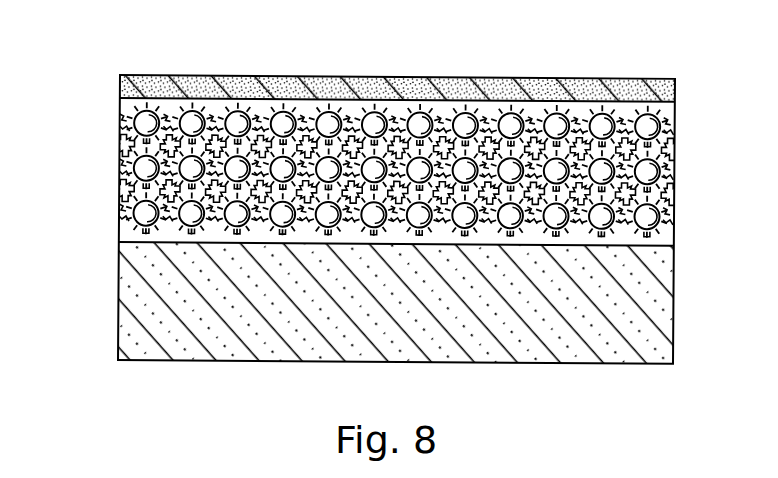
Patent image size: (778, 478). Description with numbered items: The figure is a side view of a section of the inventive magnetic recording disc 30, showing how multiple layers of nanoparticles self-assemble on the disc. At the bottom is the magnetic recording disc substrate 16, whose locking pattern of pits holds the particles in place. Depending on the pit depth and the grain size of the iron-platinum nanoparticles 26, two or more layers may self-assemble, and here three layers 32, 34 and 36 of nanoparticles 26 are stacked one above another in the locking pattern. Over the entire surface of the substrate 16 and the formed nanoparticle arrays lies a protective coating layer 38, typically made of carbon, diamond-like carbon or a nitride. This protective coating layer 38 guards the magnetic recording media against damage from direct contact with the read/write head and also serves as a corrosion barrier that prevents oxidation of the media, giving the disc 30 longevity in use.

The magnetic recording disc substrate 16 is at (533, 360).
The iron-platinum nanoparticles 26 is at (661, 126).
The magnetic recording disc 30 is at (380, 241).
The first layer of nanoparticles 32 is at (101, 207).
The second layer of nanoparticles 34 is at (101, 168).
The third layer of nanoparticles 36 is at (101, 122).
The protective coating layer 38 is at (188, 75).